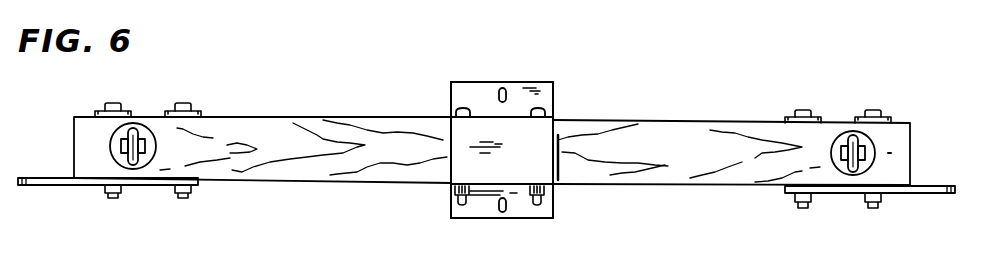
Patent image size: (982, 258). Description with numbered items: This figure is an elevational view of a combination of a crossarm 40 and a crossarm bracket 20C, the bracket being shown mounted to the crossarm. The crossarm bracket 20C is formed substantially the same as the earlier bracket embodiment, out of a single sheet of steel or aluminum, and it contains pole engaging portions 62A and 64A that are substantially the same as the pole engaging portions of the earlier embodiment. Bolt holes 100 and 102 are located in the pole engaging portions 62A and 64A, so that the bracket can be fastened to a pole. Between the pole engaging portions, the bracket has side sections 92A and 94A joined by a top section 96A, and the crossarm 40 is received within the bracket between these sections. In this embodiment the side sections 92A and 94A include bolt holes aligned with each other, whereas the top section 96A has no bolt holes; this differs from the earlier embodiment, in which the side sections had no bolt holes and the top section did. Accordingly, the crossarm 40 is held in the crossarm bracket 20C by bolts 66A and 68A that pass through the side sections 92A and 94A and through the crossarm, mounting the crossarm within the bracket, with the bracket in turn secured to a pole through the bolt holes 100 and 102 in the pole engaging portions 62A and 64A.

The crossarm bracket 20C is at (500, 134).
The crossarm 40 is at (300, 168).
The pole engaging portion 62A is at (543, 210).
The pole engaging portion 64A is at (485, 87).
The bolt 66A is at (458, 108).
The bolt 68A is at (550, 110).
The side section 92A is at (473, 82).
The side section 94A is at (484, 193).
The top section 96A is at (458, 163).
The bolt hole 100 is at (503, 87).
The bolt hole 102 is at (505, 210).